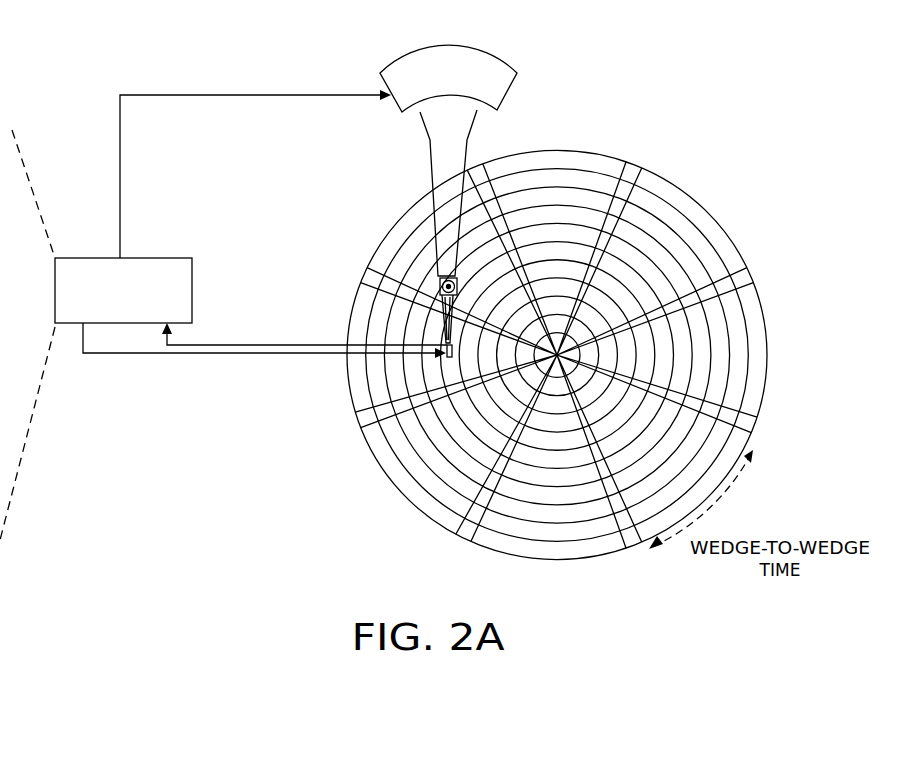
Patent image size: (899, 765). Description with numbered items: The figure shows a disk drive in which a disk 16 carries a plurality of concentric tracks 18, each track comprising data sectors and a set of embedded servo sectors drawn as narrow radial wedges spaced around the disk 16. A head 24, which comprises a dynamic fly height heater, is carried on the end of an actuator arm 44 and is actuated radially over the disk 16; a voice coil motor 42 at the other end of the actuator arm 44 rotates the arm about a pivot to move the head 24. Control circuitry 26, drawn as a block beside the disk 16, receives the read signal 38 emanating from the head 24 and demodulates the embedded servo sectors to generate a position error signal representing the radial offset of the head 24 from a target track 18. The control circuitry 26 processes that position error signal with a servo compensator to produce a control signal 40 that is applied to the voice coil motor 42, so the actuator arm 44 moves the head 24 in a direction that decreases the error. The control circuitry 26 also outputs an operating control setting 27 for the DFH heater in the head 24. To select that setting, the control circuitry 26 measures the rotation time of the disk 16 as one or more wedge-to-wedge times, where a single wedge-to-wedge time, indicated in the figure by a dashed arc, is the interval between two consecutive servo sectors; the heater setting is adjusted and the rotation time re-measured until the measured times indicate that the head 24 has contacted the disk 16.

The disk 16 is at (703, 193).
The tracks 18 is at (557, 177).
The head 24 is at (443, 358).
The control circuitry 26 is at (160, 258).
The operating control setting 27 is at (90, 354).
The read signal 38 is at (331, 344).
The control signal 40 is at (118, 163).
The voice coil motor 42 is at (400, 110).
The actuator arm 44 is at (430, 165).